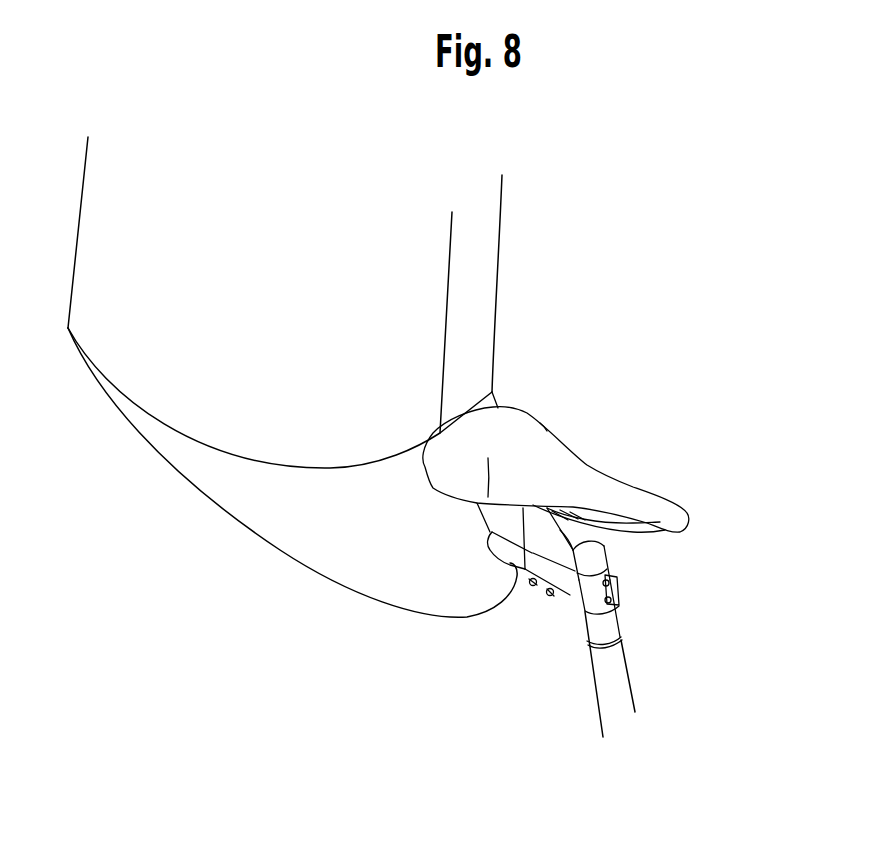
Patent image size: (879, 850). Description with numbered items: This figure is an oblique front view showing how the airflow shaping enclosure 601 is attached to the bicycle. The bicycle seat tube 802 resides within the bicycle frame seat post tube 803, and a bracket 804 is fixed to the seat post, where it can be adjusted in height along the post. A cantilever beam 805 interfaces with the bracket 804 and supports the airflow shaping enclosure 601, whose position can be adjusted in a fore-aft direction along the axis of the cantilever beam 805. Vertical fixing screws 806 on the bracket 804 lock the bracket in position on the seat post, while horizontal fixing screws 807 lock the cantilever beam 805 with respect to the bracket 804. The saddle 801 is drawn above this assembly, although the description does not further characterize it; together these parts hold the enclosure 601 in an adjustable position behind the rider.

The airflow shaping enclosure 601 is at (463, 338).
The saddle 801 is at (530, 450).
The bicycle seat tube 802 is at (603, 628).
The bicycle frame seat post tube 803 is at (613, 700).
The bracket 804 is at (593, 590).
The cantilever beam 805 is at (508, 550).
The vertical fixing screws 806 is at (615, 595).
The horizontal fixing screws 807 is at (550, 595).